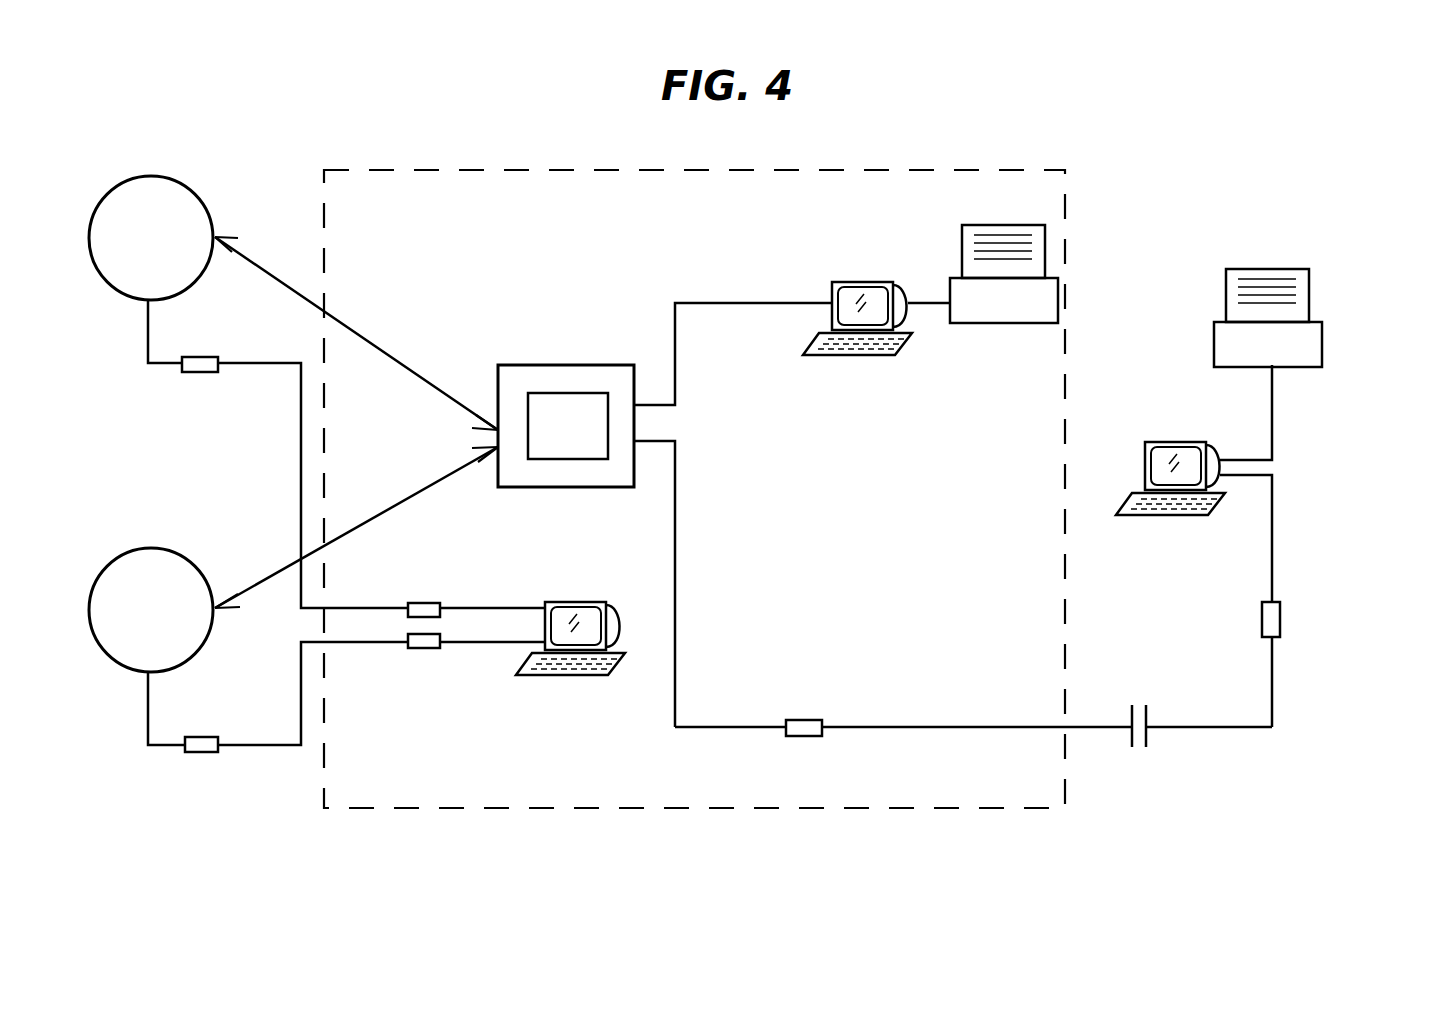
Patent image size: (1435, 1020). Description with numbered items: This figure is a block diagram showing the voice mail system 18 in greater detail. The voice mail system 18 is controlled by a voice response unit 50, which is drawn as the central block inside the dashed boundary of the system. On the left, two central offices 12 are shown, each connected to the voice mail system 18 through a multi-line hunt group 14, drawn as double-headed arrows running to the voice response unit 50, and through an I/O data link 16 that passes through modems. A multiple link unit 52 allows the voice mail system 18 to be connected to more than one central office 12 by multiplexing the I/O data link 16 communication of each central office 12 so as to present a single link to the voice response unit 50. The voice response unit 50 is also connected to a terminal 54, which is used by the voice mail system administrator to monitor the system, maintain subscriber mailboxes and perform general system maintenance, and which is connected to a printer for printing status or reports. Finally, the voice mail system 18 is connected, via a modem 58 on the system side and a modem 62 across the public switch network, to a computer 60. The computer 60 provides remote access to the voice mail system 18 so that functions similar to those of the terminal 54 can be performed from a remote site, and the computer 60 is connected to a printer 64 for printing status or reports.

The central office 12 is at (132, 177).
The multi-line hunt group 14 is at (263, 270).
The I/O data link 16 is at (262, 365).
The voice mail system 18 is at (436, 168).
The voice response unit 50 is at (553, 365).
The multiple link unit 52 is at (605, 603).
The terminal 54 is at (866, 282).
The modem 58 is at (802, 720).
The computer 60 is at (1160, 442).
The modem 62 is at (1280, 614).
The printer 64 is at (1310, 340).